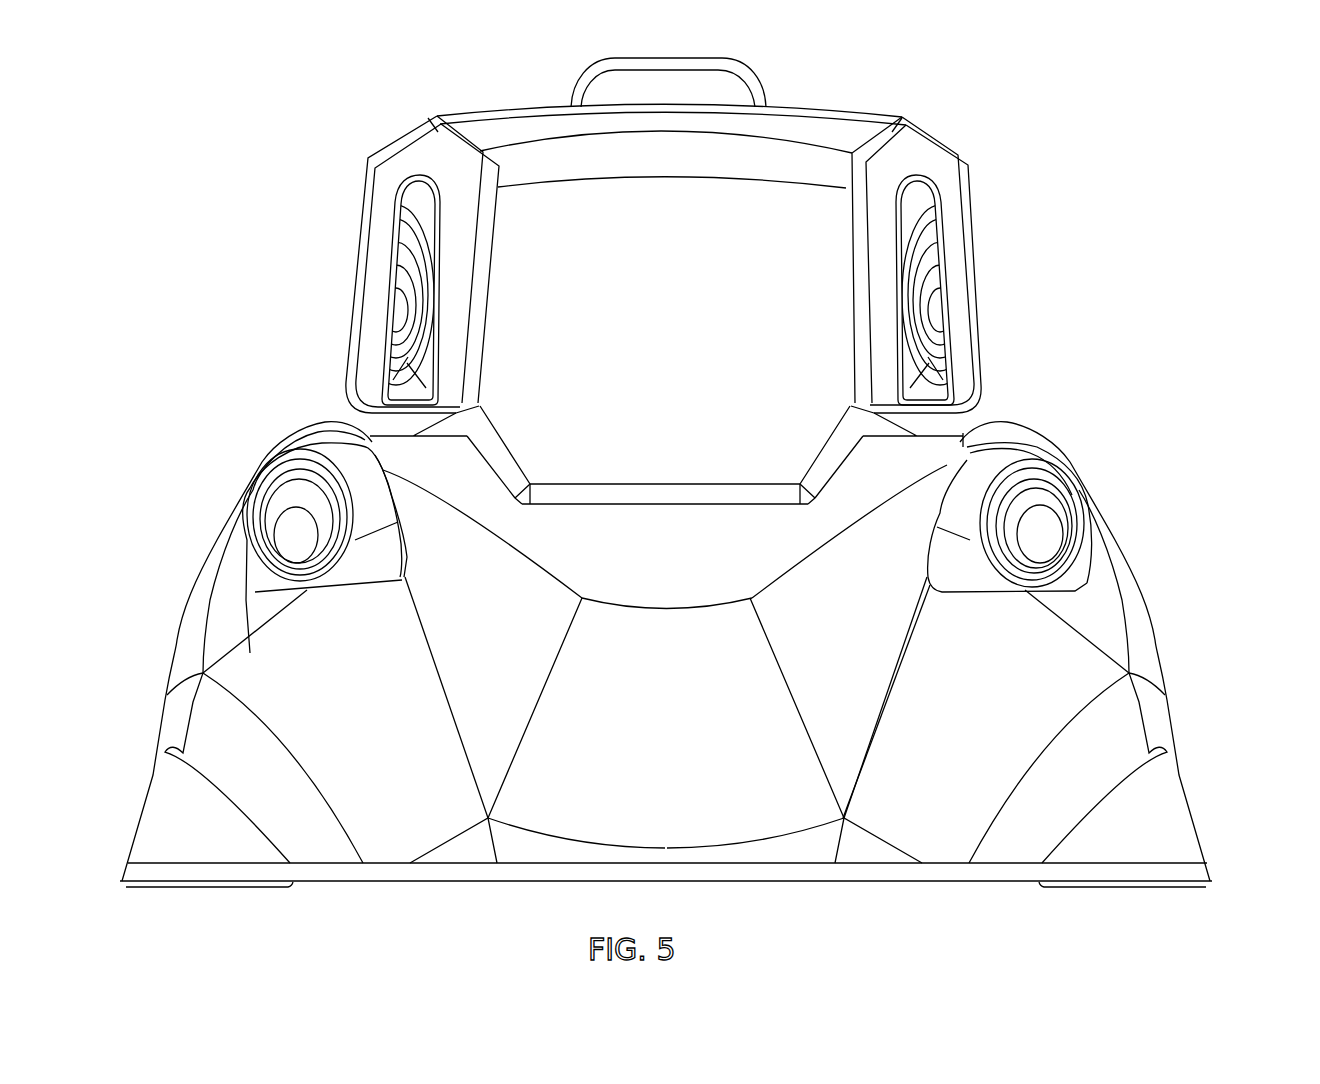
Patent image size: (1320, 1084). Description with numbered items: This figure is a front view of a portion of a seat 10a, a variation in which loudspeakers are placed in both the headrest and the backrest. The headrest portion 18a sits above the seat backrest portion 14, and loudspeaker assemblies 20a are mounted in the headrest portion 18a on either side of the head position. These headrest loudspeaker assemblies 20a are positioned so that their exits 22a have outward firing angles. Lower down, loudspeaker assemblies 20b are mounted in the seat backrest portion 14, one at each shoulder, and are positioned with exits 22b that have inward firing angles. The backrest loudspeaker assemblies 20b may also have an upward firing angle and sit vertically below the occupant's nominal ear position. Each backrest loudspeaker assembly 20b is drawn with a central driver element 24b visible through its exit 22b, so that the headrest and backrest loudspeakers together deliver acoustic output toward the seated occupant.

The seat 10a is at (216, 171).
The seat backrest portion 14 is at (700, 606).
The headrest portion 18a is at (688, 274).
The loudspeaker assemblies 20a is at (407, 283).
The exits 22a is at (456, 304).
The loudspeaker assemblies 20b is at (262, 447).
The exits 22b is at (317, 423).
The speaker dust cap 24b is at (275, 530).